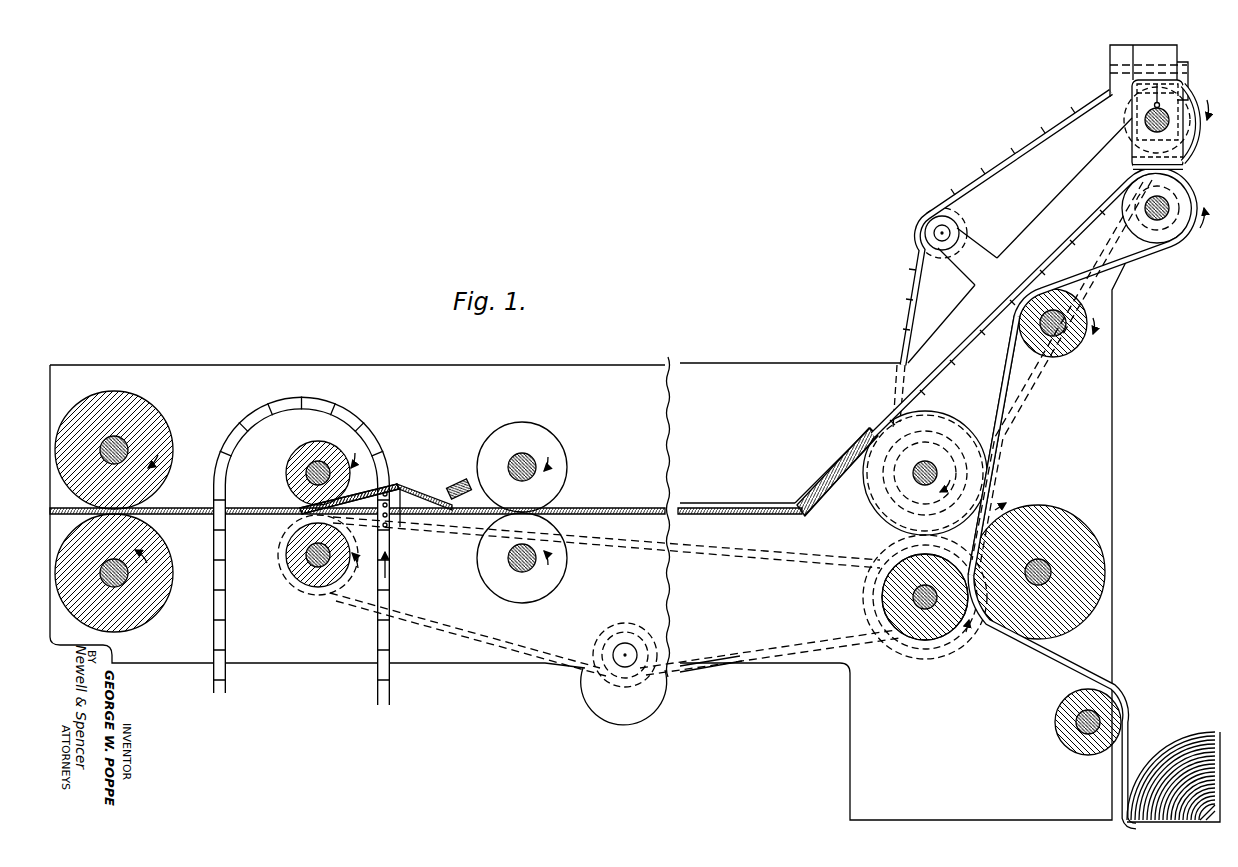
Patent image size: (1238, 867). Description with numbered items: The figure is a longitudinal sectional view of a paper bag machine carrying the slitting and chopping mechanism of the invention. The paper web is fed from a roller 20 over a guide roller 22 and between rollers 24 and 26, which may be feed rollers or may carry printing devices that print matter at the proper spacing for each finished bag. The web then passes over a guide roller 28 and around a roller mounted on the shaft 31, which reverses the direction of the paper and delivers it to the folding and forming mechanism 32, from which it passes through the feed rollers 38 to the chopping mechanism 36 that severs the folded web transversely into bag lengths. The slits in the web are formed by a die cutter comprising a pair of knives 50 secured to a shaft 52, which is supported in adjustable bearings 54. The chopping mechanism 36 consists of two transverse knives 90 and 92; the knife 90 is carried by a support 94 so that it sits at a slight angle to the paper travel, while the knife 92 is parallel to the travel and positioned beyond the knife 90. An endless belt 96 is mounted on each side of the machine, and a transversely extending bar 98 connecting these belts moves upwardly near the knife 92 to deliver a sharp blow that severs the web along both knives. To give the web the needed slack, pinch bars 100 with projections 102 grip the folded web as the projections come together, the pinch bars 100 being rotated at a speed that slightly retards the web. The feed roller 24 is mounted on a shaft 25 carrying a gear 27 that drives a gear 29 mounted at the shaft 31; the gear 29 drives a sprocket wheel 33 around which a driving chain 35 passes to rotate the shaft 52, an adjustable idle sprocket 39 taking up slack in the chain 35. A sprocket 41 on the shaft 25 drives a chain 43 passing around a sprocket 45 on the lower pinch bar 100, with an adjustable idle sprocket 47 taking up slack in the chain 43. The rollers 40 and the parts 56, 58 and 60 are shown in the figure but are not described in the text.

The roller 20 is at (1180, 744).
The guide roller 22 is at (1062, 742).
The feed roller 24 is at (928, 638).
The shaft 25 is at (918, 594).
The roller 26 is at (1052, 506).
The gear 27 is at (890, 654).
The guide roller 28 is at (1068, 344).
The gear 29 is at (932, 413).
The shaft 31 is at (930, 466).
The folding and forming mechanism 32 is at (826, 480).
The sprocket wheel 33 is at (990, 456).
The driving chain 35 is at (976, 184).
The chopping mechanism 36 is at (447, 498).
The feed rollers 38 is at (567, 470).
The adjustable idle sprocket 39 is at (958, 226).
The draw rollers 40 is at (162, 432).
The sprocket 41 is at (947, 638).
The chain 43 is at (806, 650).
The sprocket 45 is at (333, 600).
The adjustable idle sprocket 47 is at (622, 632).
The knives 50 is at (1186, 168).
The shaft 52 is at (1150, 118).
The bearings 54 is at (1178, 57).
The arcuate segment 56 is at (1191, 138).
The pin 58 is at (1178, 96).
The slot 60 is at (1185, 77).
The knife 90 is at (462, 482).
The knife 92 is at (412, 516).
The support 94 is at (455, 493).
The endless belt 96 is at (393, 650).
The bar 98 is at (400, 527).
The pinch bars 100 is at (333, 450).
The projection 102 is at (290, 497).